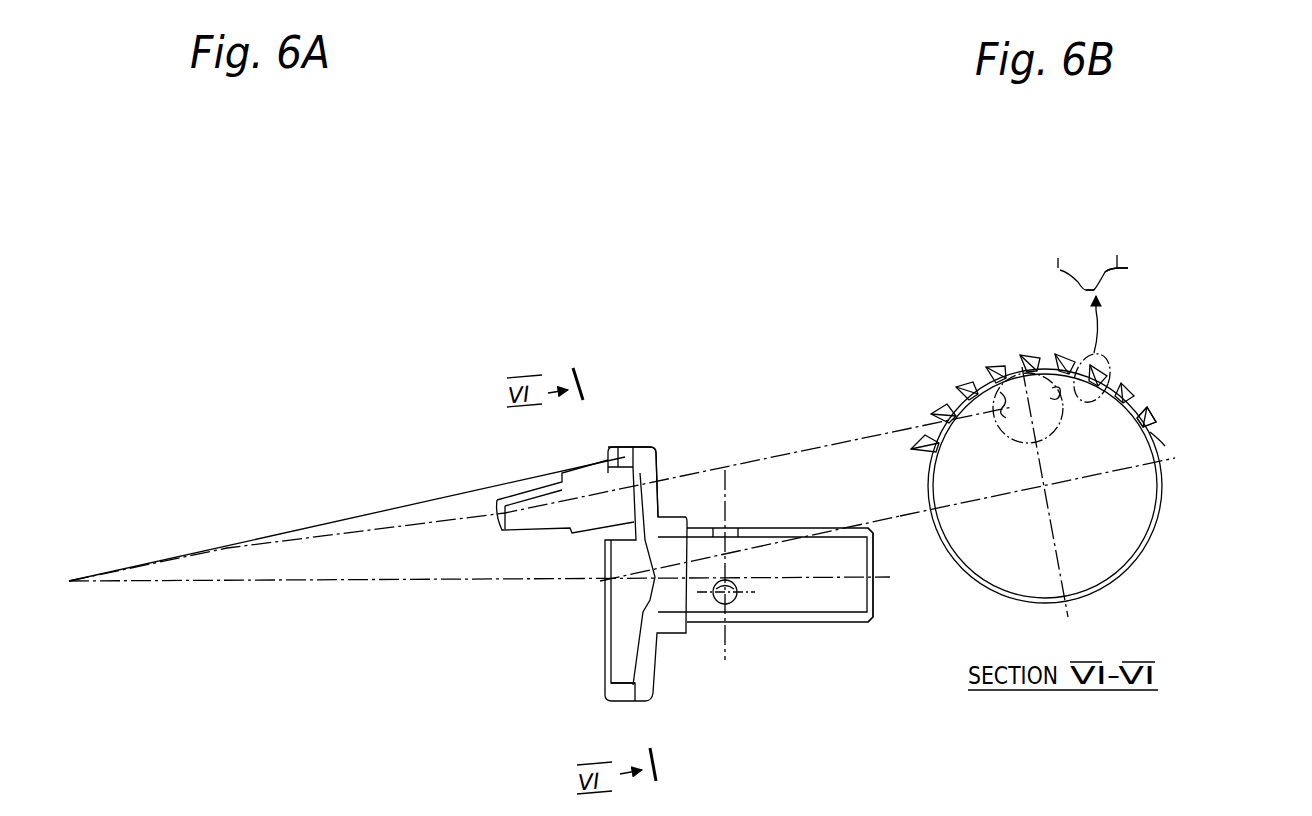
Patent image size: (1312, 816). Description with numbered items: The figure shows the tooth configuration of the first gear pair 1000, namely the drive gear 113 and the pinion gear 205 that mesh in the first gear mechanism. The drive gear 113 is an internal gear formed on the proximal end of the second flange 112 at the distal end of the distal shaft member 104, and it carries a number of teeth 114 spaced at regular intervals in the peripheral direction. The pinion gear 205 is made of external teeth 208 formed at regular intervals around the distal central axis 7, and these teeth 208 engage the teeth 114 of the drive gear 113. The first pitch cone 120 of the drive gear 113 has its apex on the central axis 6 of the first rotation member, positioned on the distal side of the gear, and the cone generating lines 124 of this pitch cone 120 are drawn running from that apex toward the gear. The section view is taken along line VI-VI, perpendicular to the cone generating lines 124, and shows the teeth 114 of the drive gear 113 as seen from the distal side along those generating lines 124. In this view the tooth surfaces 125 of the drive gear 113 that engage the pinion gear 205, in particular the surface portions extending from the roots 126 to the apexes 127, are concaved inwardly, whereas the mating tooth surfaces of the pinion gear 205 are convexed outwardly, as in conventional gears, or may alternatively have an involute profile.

In FIG. 6A, the first gear pair 1000 is at (548, 256).
In FIG. 6A, the cone generating lines 124 is at (240, 536).
In FIG. 6A, the first pitch cone 120 is at (348, 520).
In FIG. 6A, the distal central axis 7 is at (232, 583).
In FIG. 6A, the teeth 208 is at (577, 478).
In FIG. 6A, the second flange 112 is at (656, 460).
In FIG. 6A, the distal shaft member 104 is at (775, 528).
In FIG. 6A, the pinion gear 205 is at (606, 538).
In FIG. 6A, the central axis 6 is at (880, 578).
In FIG. 6A, the teeth 114 is at (617, 702).
In FIG. 6A, the drive gear 113 is at (700, 590).
In FIG. 6B, the tooth surfaces 125 is at (1058, 286).
In FIG. 6B, the roots 126 is at (1112, 268).
In FIG. 6B, the apexes 127 is at (1097, 292).